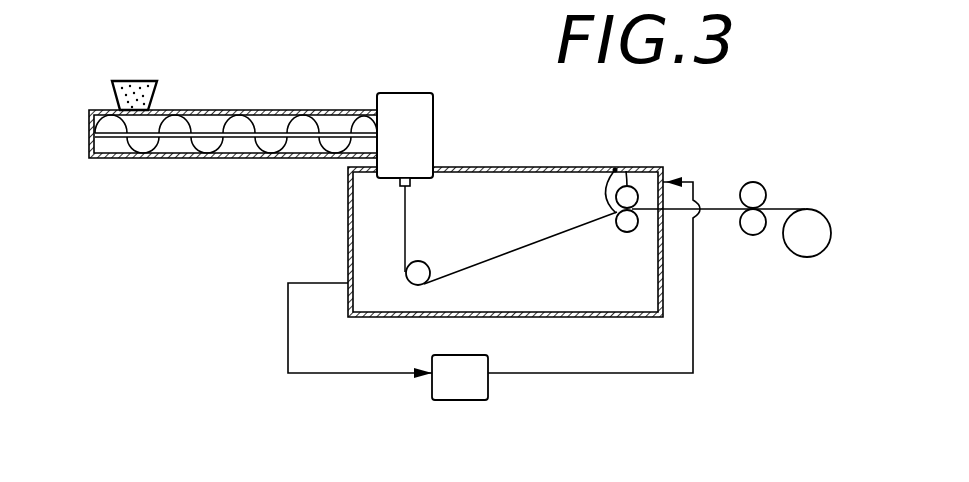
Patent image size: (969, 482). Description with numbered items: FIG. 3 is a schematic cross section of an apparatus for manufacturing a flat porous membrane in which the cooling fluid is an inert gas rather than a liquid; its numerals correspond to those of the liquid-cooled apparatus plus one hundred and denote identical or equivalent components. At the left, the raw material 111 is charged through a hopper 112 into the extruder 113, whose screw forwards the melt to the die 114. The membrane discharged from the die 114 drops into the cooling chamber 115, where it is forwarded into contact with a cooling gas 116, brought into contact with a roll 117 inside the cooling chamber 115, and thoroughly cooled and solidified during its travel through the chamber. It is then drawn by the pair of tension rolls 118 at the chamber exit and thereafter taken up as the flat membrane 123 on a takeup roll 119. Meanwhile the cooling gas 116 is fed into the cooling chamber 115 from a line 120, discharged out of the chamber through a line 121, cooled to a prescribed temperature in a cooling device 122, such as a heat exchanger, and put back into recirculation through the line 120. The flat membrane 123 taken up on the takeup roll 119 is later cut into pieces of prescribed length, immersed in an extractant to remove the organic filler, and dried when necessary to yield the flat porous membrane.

The raw material 111 is at (136, 80).
The hopper 112 is at (118, 97).
The extruder 113 is at (205, 150).
The die 114 is at (433, 132).
The cooling chamber 115 is at (348, 242).
The cooling gas 116 is at (593, 290).
The roll 117 is at (418, 286).
The tension rolls 118 is at (615, 170).
The takeup roll 119 is at (805, 258).
The line 120 is at (700, 300).
The line 121 is at (287, 333).
The cooling device 122 is at (465, 382).
The flat membrane 123 is at (722, 208).